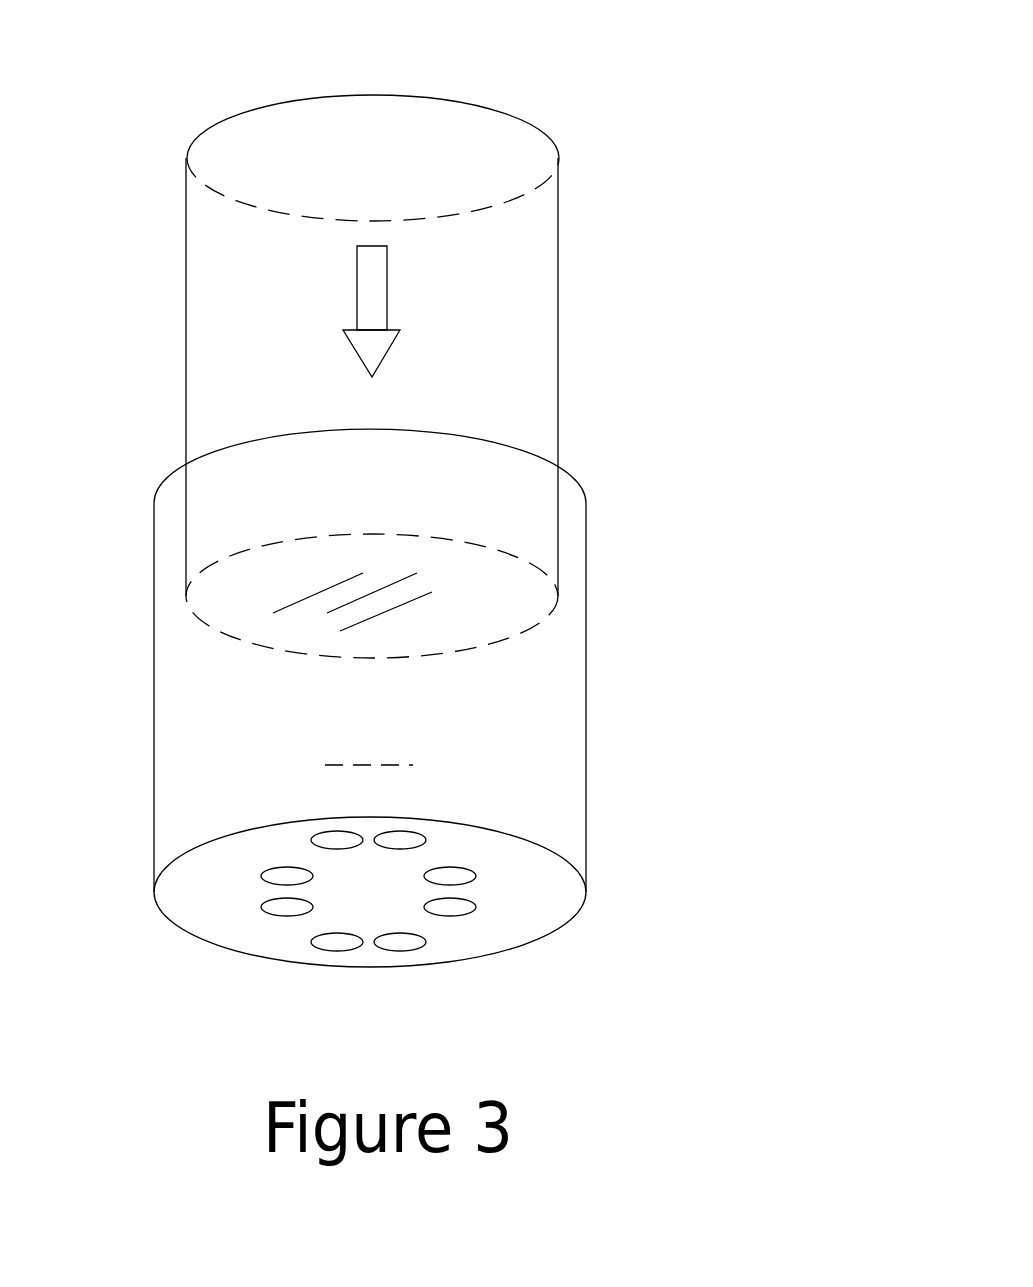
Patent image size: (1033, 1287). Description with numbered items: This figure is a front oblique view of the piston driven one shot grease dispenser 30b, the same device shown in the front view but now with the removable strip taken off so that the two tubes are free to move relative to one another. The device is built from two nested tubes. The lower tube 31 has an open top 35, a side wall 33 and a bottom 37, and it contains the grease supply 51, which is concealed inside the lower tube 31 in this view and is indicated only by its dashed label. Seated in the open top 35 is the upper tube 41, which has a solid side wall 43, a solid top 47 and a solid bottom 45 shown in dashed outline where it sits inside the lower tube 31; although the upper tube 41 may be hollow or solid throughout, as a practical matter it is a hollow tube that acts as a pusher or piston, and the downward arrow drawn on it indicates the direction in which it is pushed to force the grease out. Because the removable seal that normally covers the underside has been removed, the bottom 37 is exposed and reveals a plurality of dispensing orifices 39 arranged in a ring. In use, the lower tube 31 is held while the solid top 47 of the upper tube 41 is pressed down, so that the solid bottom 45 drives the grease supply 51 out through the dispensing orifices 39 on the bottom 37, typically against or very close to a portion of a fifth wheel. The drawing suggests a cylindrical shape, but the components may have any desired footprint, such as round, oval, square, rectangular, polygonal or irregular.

The piston driven one shot grease dispenser 30b is at (698, 232).
The lower tube 31 is at (567, 697).
The side wall 33 is at (553, 823).
The open top 35 is at (505, 444).
The bottom 37 is at (547, 878).
The dispensing orifices 39 is at (280, 915).
The upper tube 41 is at (540, 378).
The solid side wall 43 is at (212, 350).
The plunger bottom filter 45 is at (540, 569).
The solid top 47 is at (373, 158).
The grease supply 51 is at (369, 739).